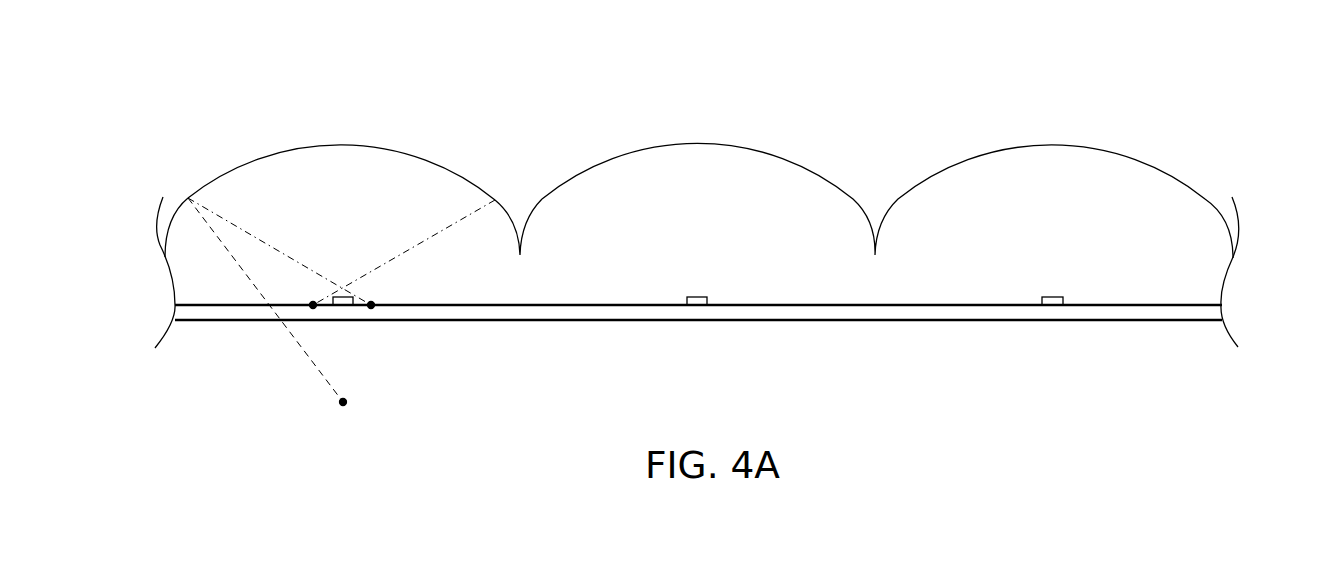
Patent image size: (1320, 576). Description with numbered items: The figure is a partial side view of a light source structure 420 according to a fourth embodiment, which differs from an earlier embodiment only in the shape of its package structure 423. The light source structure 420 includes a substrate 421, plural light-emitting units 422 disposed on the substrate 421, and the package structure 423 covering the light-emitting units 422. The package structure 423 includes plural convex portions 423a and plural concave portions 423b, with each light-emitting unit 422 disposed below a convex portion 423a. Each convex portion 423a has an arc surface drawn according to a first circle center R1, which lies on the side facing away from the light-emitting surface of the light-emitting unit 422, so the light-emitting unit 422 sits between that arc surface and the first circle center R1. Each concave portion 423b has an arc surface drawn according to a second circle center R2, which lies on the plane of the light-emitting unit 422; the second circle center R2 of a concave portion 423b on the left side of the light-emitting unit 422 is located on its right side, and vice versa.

The light source structure 420 is at (142, 139).
The substrate 421 is at (805, 313).
The light-emitting unit 422 is at (702, 307).
The package structure 423 is at (699, 139).
The convex portion 423a is at (346, 162).
The concave portion 423b is at (499, 168).
The first circle center R1 is at (343, 408).
The second circle center R2 is at (371, 308).